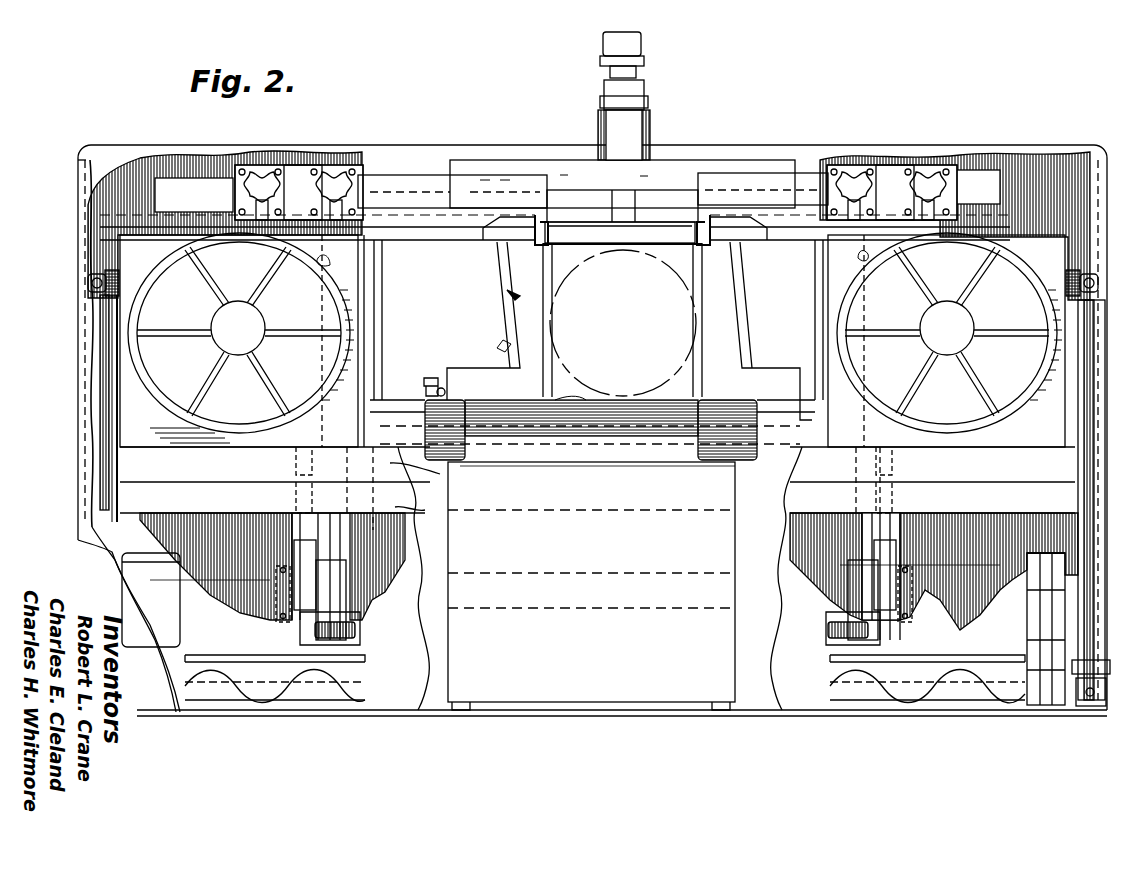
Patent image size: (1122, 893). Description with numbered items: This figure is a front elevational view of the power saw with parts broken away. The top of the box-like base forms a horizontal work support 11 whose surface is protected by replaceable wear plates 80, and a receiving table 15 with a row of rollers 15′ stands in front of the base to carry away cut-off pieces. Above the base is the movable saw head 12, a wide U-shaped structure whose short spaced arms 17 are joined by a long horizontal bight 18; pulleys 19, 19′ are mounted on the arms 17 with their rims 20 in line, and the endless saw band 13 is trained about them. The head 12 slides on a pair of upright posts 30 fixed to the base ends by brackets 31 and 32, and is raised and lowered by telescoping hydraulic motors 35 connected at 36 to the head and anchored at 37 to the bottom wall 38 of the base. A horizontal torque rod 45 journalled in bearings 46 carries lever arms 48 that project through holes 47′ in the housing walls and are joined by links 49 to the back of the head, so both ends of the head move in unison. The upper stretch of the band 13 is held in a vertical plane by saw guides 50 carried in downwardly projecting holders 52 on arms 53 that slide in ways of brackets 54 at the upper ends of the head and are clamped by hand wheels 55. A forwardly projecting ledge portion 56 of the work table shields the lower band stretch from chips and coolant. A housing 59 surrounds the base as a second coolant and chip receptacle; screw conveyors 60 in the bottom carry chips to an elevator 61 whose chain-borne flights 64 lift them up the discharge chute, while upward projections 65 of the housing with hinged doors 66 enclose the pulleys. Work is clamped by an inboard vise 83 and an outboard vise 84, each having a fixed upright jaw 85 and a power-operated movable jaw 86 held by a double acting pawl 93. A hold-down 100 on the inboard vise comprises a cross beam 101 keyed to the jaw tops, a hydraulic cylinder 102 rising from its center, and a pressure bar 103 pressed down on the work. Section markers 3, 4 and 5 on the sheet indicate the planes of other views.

The work support 11 is at (614, 384).
The movable saw head 12 is at (405, 508).
The endless saw band 13 is at (634, 238).
The receiving table 15 is at (544, 690).
The rollers 15′ is at (570, 400).
The arms 17 is at (110, 262).
The bight 18 is at (398, 470).
The pulley 19 is at (248, 282).
The pulley 19′ is at (958, 276).
The rims 20 is at (318, 258).
The upright posts 30 is at (340, 590).
The bracket 31 is at (810, 418).
The bracket 32 is at (368, 636).
The hydraulic motors 35 is at (100, 344).
The connection 36 is at (88, 283).
The anchor 37 is at (1090, 700).
The bottom wall 38 is at (1000, 705).
The torque rod 45 is at (664, 604).
The bearings 46 is at (276, 618).
The holes 47′ is at (312, 632).
The lever arms 48 is at (298, 530).
The links 49 is at (296, 466).
The saw guides 50 is at (528, 190).
The holders 52 is at (536, 235).
The arms 53 is at (396, 190).
The brackets 54 is at (275, 165).
The hand wheels 55 is at (256, 178).
The ledge portion 56 is at (426, 390).
The housing 59 is at (775, 708).
The screw conveyor 60 is at (905, 705).
The elevator mechanism 61 is at (1019, 635).
The flights 64 is at (1046, 570).
The upward projections 65 is at (138, 175).
The hinged doors 66 is at (92, 160).
The wear plates 80 is at (374, 395).
The inboard vise 83 is at (510, 270).
The outboard vise 84 is at (520, 340).
The fixed upright jaw 85 is at (730, 314).
The movable upright jaw 86 is at (520, 312).
The double acting pawl 93 is at (442, 388).
The hold-down clamp 100 is at (668, 109).
The cross beam 101 is at (670, 165).
The hydraulic cylinder 102 is at (645, 52).
The pressure bar 103 is at (588, 236).
The section line 3 is at (637, 304).
The section line 4 is at (956, 292).
The section line 5 is at (1101, 431).